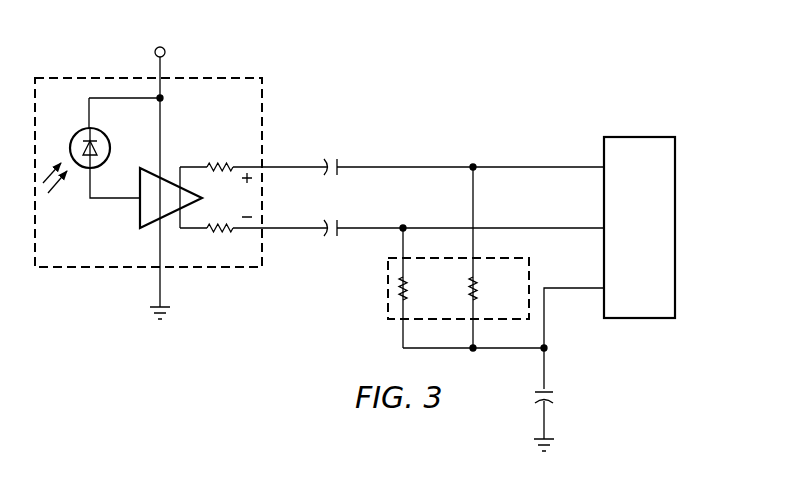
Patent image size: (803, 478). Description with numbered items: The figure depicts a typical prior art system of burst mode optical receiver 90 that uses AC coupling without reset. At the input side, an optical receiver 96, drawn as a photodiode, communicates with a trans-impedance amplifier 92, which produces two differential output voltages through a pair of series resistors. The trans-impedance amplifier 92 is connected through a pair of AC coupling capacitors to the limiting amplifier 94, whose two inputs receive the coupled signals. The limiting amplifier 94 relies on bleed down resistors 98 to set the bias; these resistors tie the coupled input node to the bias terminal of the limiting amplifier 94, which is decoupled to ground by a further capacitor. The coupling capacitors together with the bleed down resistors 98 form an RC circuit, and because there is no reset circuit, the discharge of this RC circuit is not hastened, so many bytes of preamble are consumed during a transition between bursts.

The system of burst mode optical receiver 90 is at (516, 54).
The trans-impedance amplifier 92 is at (139, 211).
The limiting amplifier 94 is at (645, 135).
The optical receiver 96 is at (79, 128).
The bleed down resistors 98 is at (386, 297).